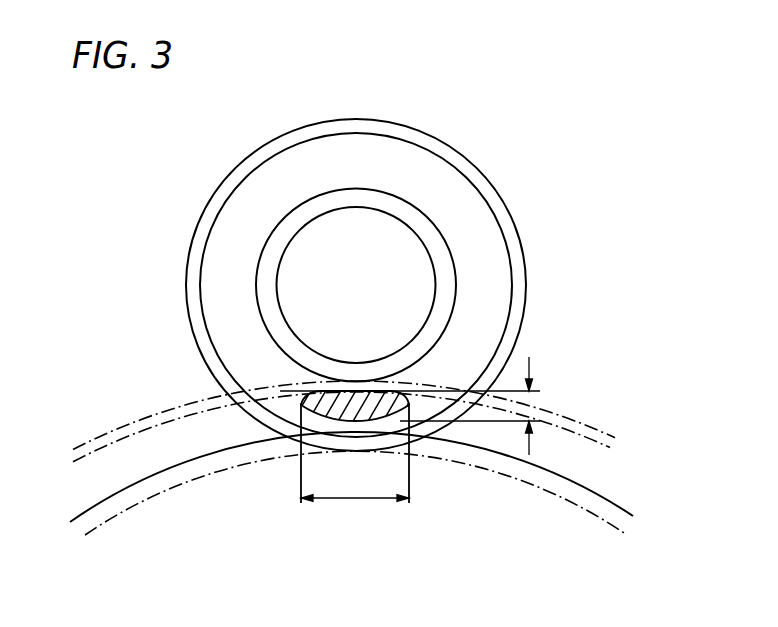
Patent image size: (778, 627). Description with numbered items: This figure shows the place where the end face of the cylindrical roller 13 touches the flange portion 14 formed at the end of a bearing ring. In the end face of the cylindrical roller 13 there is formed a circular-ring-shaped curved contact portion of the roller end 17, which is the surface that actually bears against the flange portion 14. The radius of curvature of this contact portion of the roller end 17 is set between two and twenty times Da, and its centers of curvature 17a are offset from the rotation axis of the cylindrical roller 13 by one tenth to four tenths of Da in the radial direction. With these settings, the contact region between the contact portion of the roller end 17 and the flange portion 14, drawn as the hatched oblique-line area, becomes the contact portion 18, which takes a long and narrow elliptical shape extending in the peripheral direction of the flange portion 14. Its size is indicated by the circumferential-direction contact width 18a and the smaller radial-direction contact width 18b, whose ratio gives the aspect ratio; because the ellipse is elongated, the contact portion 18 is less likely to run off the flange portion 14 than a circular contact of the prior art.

The cylindrical roller 13 is at (467, 163).
The flange portion 14 is at (147, 414).
The contact portion of the roller end 17 is at (381, 147).
The center of curvature 17a is at (283, 215).
The contact portion 18 is at (262, 419).
The circumferential-direction contact width 18a is at (355, 489).
The radial-direction contact width 18b is at (427, 410).